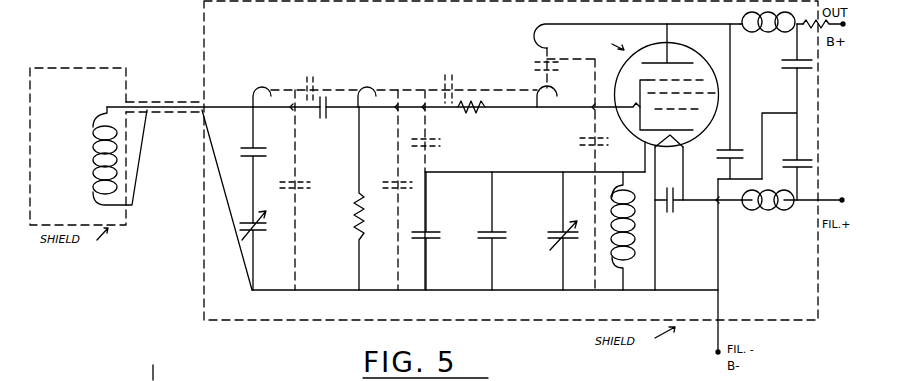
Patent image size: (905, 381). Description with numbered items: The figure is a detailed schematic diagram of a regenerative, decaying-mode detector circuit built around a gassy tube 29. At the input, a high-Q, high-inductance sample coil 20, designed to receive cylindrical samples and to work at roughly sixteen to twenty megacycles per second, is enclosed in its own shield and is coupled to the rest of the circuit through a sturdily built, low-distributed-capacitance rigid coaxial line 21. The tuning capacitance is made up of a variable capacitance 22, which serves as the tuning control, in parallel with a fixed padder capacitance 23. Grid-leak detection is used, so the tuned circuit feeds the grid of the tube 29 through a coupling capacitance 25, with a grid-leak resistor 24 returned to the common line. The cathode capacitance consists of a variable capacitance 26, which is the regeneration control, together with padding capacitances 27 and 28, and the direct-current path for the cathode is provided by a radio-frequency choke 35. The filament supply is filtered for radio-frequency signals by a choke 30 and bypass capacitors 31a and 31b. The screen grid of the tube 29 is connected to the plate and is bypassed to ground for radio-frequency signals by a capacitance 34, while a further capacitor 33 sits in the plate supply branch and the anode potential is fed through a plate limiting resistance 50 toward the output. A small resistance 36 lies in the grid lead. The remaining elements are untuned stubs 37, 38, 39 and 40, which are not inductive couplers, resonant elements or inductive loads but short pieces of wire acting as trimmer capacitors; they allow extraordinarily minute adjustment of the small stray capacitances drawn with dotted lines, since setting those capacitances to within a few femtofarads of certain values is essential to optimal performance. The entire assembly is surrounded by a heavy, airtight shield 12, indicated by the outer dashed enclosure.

The shield 12 is at (220, 323).
The sample coil 20 is at (93, 140).
The rigid coaxial line 21 is at (172, 102).
The variable capacitance 22 is at (258, 233).
The fixed padder capacitance 23 is at (263, 165).
The grid-leak resistor 24 is at (352, 213).
The coupling capacitance 25 is at (331, 118).
The variable capacitance 26 is at (556, 252).
The padding capacitance 27 is at (487, 242).
The padding capacitance 28 is at (434, 240).
The tube 29 is at (648, 156).
The choke 30 is at (766, 211).
The bypass capacitor 31a is at (678, 212).
The bypass capacitor 31b is at (776, 106).
The capacitor 33 is at (793, 70).
The capacitance 34 is at (733, 153).
The radio-frequency choke 35 is at (630, 231).
The resistance 36 is at (470, 113).
The untuned stub 37 is at (540, 27).
The untuned stub 38 is at (253, 92).
The untuned stub 39 is at (366, 92).
The untuned stub 40 is at (537, 88).
The plate limiting resistance 50 is at (823, 37).